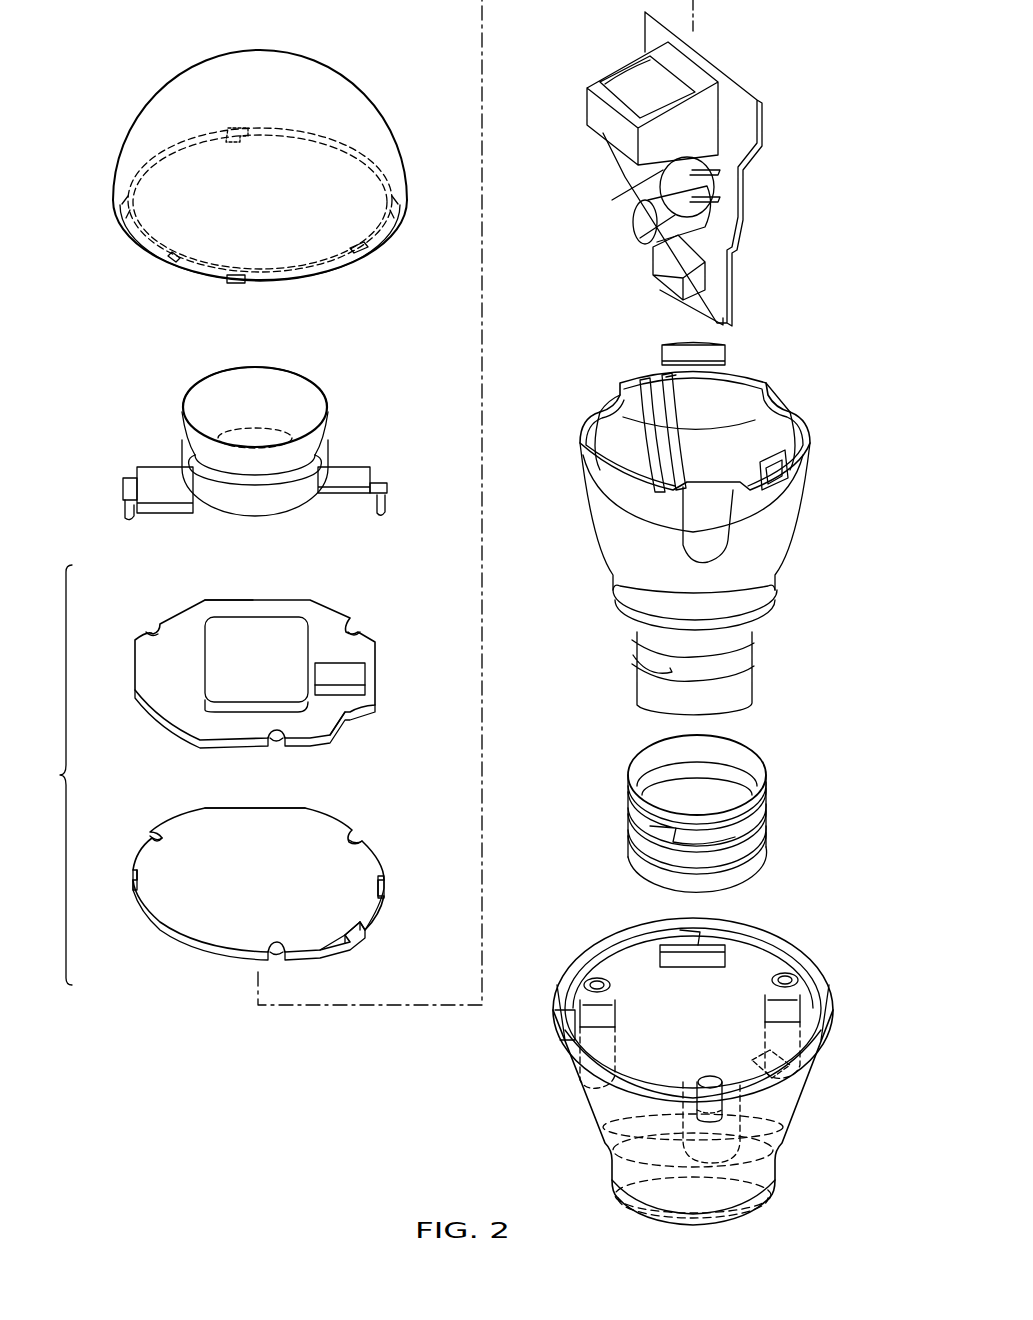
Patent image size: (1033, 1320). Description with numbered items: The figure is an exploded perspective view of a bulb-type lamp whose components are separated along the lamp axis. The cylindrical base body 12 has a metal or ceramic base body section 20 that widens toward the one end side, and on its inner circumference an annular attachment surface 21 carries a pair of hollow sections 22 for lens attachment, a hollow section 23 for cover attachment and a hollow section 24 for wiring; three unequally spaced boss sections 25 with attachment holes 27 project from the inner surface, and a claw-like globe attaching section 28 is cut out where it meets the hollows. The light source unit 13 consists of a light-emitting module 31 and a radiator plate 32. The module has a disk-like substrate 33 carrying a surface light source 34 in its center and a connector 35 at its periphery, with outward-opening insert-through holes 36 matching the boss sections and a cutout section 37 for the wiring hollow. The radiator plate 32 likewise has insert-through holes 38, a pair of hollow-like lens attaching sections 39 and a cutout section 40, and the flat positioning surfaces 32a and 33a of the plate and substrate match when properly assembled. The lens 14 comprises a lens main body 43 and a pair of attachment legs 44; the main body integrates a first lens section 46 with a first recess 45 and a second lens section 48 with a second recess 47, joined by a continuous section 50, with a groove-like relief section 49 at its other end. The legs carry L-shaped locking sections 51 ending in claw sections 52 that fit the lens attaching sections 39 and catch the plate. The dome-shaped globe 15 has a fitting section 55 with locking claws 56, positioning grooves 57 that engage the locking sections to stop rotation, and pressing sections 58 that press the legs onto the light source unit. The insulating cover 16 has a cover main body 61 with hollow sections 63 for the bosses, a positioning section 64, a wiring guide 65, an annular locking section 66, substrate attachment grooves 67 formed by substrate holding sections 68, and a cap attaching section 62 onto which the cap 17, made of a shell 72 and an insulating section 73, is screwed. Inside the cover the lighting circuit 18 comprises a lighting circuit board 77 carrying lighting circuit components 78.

The base body 12 is at (692, 1052).
The light source unit 13 is at (52, 775).
The lens 14 is at (256, 446).
The globe 15 is at (308, 52).
The cover 16 is at (704, 515).
The cap 17 is at (727, 821).
The lighting circuit 18 is at (693, 169).
The base body section 20 is at (788, 1140).
The attachment surface 21 is at (640, 955).
The hollow sections for lens attachment 22 is at (600, 1030).
The hollow section for cover attachment 23 is at (670, 948).
The hollow section for wiring 24 is at (800, 1082).
The boss sections 25 is at (700, 1075).
The attachment holes 27 is at (595, 978).
The globe attaching section 28 is at (565, 985).
The light-emitting module 31 is at (261, 666).
The radiator plate 32 is at (257, 880).
The positioning surface 32a is at (223, 808).
The substrate 33 is at (280, 602).
The positioning surface 33a is at (215, 600).
The surface light source 34 is at (247, 633).
The connector 35 is at (355, 675).
The insert-through holes 36 is at (145, 632).
The cutout section 37 is at (330, 716).
The insert-through holes 38 is at (148, 840).
The lens attaching sections 39 is at (130, 880).
The cutout section 40 is at (338, 932).
The lens main body 43 is at (207, 380).
The attachment legs 44 is at (157, 467).
The first recess 45 is at (246, 505).
The first lens section 46 is at (276, 505).
The second recess 47 is at (233, 385).
The second lens section 48 is at (258, 367).
The relief section 49 is at (297, 508).
The continuous section 50 is at (220, 472).
The locking sections 51 is at (123, 487).
The claw sections 52 is at (131, 520).
The fitting section 55 is at (178, 262).
The locking claws 56 is at (245, 137).
The positioning grooves 57 is at (125, 200).
The pressing sections 58 is at (130, 212).
The cover main body 61 is at (606, 548).
The cap attaching section 62 is at (636, 688).
The hollow sections 63 is at (602, 410).
The positioning section 64 is at (671, 347).
The wiring guide 65 is at (792, 462).
The annular locking section 66 is at (760, 615).
The substrate attachment grooves 67 is at (664, 446).
The substrate holding sections 68 is at (655, 430).
The shell 72 is at (766, 840).
The insulating section 73 is at (728, 890).
The lighting circuit board 77 is at (742, 152).
The lighting circuit components 78 is at (640, 180).